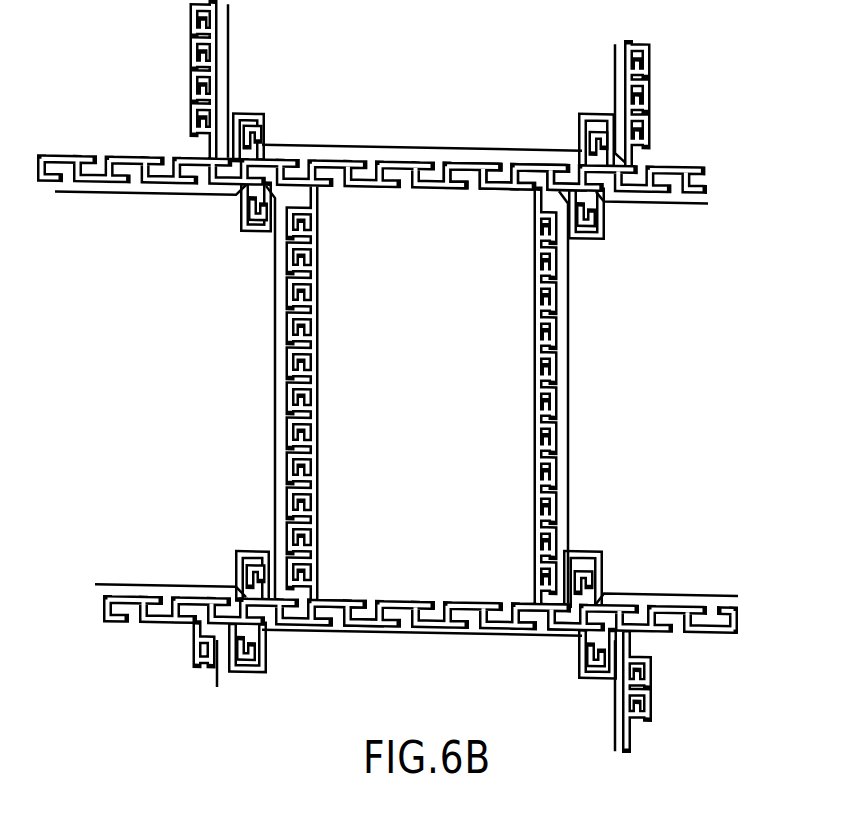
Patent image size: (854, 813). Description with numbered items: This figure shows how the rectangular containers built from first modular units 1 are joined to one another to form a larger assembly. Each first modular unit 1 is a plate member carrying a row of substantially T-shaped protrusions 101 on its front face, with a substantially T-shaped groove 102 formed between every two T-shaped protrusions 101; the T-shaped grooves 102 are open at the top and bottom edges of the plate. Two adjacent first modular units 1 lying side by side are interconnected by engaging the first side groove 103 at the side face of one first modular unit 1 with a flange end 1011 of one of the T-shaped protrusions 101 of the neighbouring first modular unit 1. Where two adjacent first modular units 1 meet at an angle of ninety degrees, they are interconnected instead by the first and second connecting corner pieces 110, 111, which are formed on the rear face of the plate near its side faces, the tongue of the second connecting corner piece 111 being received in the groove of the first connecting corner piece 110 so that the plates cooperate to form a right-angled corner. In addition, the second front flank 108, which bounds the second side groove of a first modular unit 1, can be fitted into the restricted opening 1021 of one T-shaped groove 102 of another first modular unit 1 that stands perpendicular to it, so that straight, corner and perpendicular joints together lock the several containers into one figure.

The first modular unit 1 is at (150, 641).
The T-shaped protrusion 101 is at (240, 190).
The T-shaped groove 102 is at (478, 187).
The first side groove 103 is at (565, 637).
The second front flank 108 is at (537, 183).
The first connecting corner piece 110 is at (253, 232).
The second connecting corner piece 111 is at (265, 204).
The flange end 1011 is at (547, 630).
The restricted opening 1021 is at (466, 186).